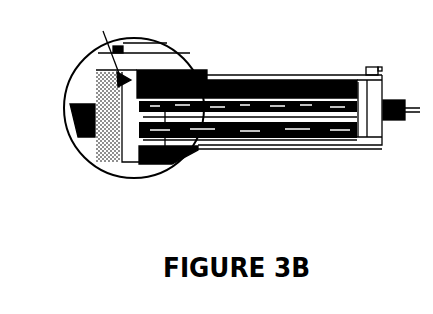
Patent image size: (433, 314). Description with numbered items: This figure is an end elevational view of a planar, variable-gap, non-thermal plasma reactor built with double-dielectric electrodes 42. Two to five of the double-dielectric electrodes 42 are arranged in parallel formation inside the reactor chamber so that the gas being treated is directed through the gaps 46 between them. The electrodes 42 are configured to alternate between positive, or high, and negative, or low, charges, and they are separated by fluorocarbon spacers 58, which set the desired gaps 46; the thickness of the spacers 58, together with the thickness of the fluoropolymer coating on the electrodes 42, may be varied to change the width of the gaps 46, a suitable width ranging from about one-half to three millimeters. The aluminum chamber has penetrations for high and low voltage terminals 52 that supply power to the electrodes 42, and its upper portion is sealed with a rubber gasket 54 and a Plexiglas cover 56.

The double-dielectric electrodes 42 is at (172, 167).
The gaps 46 is at (291, 147).
The high and low voltage terminals 52 is at (398, 134).
The rubber gasket 54 is at (93, 77).
The Plexiglas cover 56 is at (254, 63).
The fluorocarbon spacers 58 is at (139, 153).